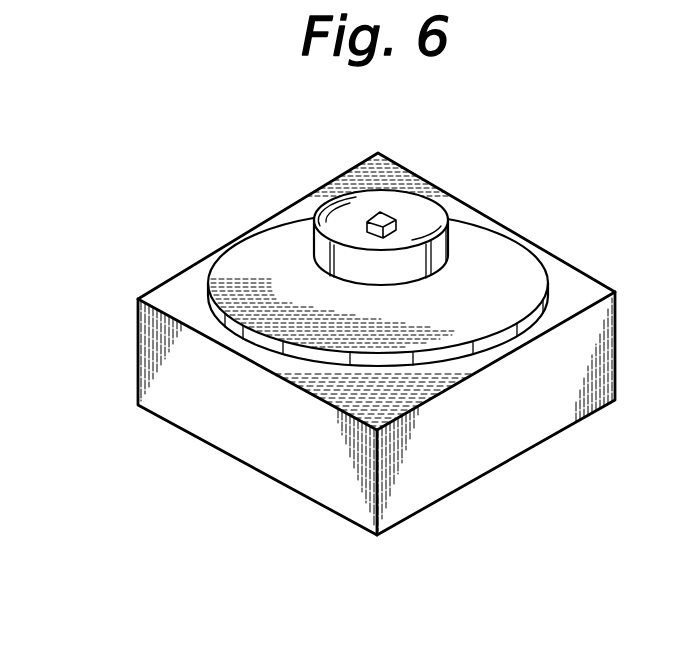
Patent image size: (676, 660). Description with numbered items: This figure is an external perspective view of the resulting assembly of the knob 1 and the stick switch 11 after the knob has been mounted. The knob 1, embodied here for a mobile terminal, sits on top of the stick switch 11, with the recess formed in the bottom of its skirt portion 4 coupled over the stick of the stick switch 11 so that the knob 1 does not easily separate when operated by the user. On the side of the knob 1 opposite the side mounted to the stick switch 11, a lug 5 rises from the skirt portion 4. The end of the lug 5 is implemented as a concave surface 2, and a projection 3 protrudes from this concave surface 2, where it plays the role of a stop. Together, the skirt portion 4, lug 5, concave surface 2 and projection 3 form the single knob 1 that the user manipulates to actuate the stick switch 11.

The knob 1 is at (467, 352).
The concave surface 2 is at (414, 206).
The projection 3 is at (366, 218).
The skirt portion 4 is at (253, 273).
The lug 5 is at (445, 259).
The stick switch 11 is at (332, 511).